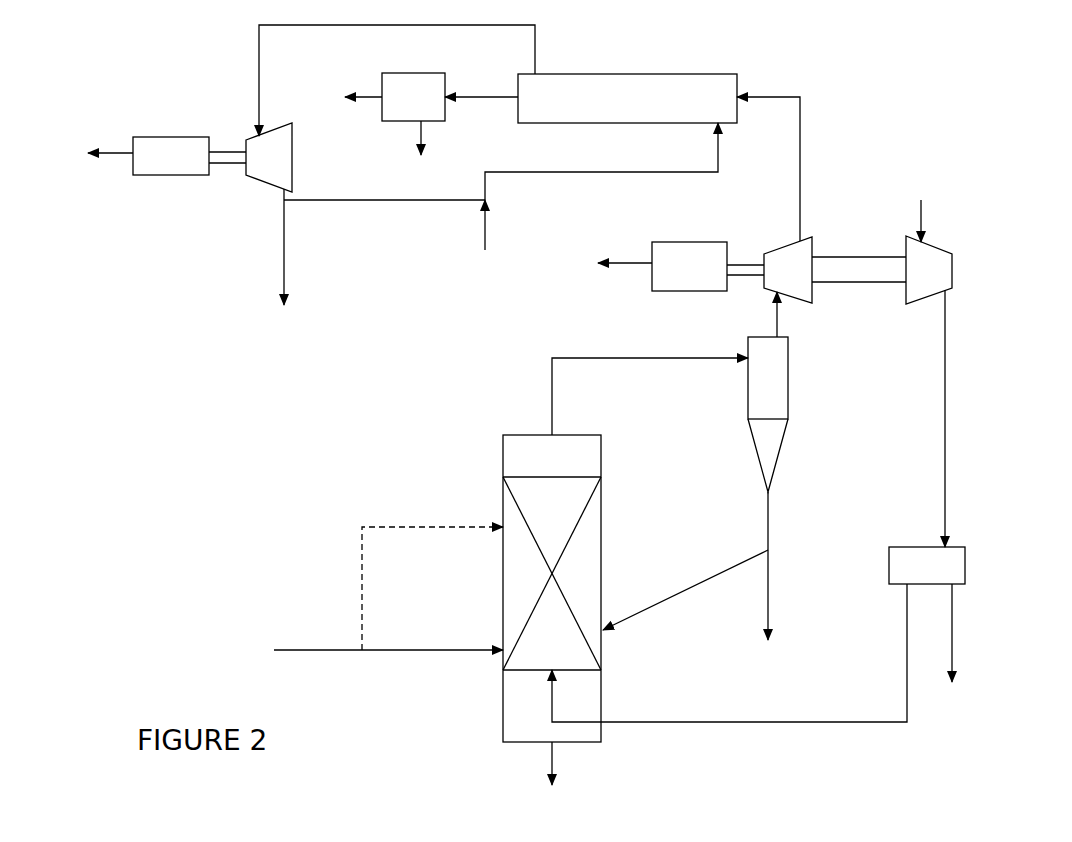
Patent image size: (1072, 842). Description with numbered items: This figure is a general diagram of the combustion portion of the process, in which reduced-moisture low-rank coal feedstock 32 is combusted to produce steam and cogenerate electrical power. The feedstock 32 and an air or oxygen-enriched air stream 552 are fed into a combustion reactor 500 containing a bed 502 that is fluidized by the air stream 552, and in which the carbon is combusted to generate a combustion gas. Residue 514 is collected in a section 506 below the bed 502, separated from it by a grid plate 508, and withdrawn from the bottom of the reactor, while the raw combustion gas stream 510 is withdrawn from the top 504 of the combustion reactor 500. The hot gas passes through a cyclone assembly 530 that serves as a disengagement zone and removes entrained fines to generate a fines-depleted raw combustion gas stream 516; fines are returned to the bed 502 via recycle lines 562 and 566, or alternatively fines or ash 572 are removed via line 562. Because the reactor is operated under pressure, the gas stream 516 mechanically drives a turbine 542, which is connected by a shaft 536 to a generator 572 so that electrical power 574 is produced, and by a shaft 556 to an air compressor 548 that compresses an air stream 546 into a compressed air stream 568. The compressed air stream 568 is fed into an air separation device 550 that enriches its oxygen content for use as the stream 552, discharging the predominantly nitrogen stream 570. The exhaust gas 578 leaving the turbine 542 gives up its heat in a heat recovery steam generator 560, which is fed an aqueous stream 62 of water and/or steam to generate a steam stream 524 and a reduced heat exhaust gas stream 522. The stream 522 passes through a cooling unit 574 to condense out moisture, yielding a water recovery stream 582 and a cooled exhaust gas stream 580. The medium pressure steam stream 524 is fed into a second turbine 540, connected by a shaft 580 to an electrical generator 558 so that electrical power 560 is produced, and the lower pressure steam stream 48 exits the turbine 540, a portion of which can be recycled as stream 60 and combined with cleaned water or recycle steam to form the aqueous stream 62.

The steam stream 524 is at (258, 65).
The second turbine 540 is at (255, 178).
The shaft 580 is at (245, 150).
The electrical generator 558 is at (171, 156).
The heat recovery steam generator 560 is at (382, 119).
The cooling unit 574 is at (517, 173).
The reduced heat exhaust gas stream 522 is at (506, 97).
The water recovery stream 582 is at (420, 154).
The lower pressure steam stream 48 is at (279, 267).
The recycle steam stream 60 is at (400, 203).
The aqueous stream 62 is at (520, 176).
The exhaust gas 578 is at (800, 158).
The turbine 542 is at (783, 242).
The shaft 536 is at (748, 260).
The generator 572 is at (721, 457).
The shaft 556 is at (852, 283).
The air compressor 548 is at (952, 262).
The air stream 546 is at (919, 207).
The compressed air stream 568 is at (945, 346).
The fines-depleted raw combustion gas stream 516 is at (770, 312).
The cyclone assembly 530 is at (788, 380).
The raw combustion gas stream 510 is at (550, 405).
The top of combustion reactor 504 is at (520, 452).
The combustion reactor 500 is at (503, 510).
The bed 502 is at (563, 513).
The low-rank coal feedstock 32 is at (362, 542).
The recycle line 566 is at (665, 598).
The recycle line 562 is at (768, 530).
The grid plate 508 is at (601, 670).
The section below bed 506 is at (520, 722).
The residue 514 is at (551, 781).
The air or oxygen-enriched air stream 552 is at (838, 752).
The air separation device 550 is at (927, 565).
The separated gaseous components stream 570 is at (950, 649).